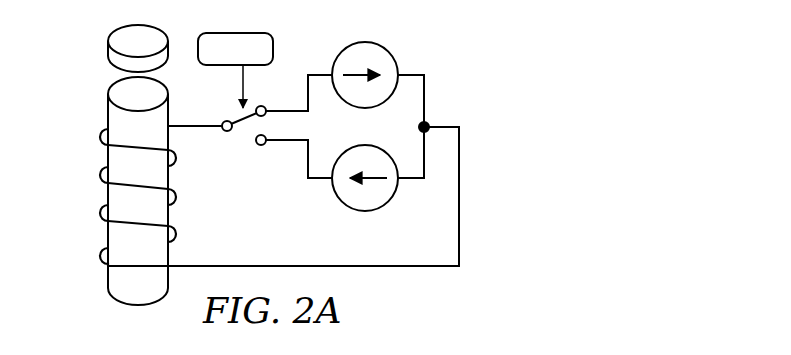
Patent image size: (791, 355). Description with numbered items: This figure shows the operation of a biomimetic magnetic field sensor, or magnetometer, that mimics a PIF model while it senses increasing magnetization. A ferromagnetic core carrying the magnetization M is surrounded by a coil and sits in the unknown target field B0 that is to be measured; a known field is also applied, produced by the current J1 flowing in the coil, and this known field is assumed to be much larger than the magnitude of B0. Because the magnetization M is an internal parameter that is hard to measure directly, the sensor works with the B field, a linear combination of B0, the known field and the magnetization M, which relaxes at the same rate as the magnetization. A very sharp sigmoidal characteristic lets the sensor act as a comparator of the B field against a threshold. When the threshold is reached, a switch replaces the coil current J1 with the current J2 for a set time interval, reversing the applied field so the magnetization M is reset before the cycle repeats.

The magnetization M is at (138, 191).
The coil current J1 is at (378, 81).
The coil current J2 is at (378, 169).
The unknown magnetic field B0 is at (89, 56).